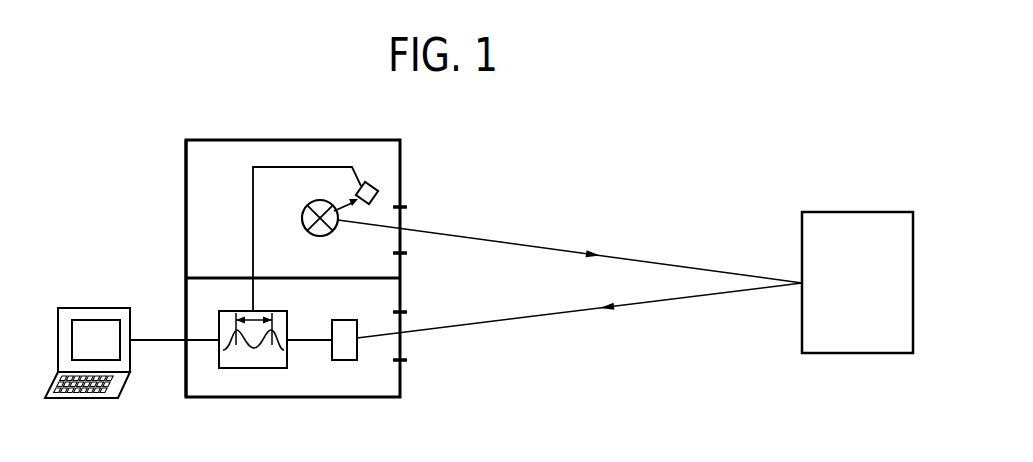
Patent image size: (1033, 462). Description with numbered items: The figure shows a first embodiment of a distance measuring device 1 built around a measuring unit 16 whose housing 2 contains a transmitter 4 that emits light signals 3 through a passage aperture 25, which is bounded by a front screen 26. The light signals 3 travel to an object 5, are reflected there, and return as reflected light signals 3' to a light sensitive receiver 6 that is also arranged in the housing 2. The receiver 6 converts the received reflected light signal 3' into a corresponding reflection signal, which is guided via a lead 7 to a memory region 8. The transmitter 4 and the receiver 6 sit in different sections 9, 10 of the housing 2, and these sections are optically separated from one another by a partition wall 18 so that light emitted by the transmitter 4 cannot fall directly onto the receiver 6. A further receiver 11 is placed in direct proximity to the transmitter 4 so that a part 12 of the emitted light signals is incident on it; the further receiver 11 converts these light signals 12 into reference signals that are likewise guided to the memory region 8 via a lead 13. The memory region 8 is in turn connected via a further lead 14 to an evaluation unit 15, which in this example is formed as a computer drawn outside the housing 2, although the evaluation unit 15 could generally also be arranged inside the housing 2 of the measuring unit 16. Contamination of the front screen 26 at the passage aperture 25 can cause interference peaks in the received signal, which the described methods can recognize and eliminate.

The measuring device 1 is at (175, 127).
The housing 2 is at (279, 140).
The light signals 3 is at (570, 246).
The reflected light signals 3' is at (579, 321).
The transmitter 4 is at (323, 237).
The object 5 is at (847, 245).
The receiver 6 is at (345, 350).
The lead 7 is at (305, 340).
The memory region 8 is at (253, 361).
The section 9 is at (202, 171).
The section 10 is at (200, 384).
The further receiver 11 is at (376, 187).
The part of the light signals 12 is at (352, 202).
The lead 13 is at (253, 215).
The further lead 14 is at (163, 340).
The evaluation unit 15 is at (80, 392).
The measuring unit 16 is at (229, 140).
The partition wall 18 is at (298, 278).
The passage aperture 25 is at (407, 209).
The front screen 26 is at (407, 250).